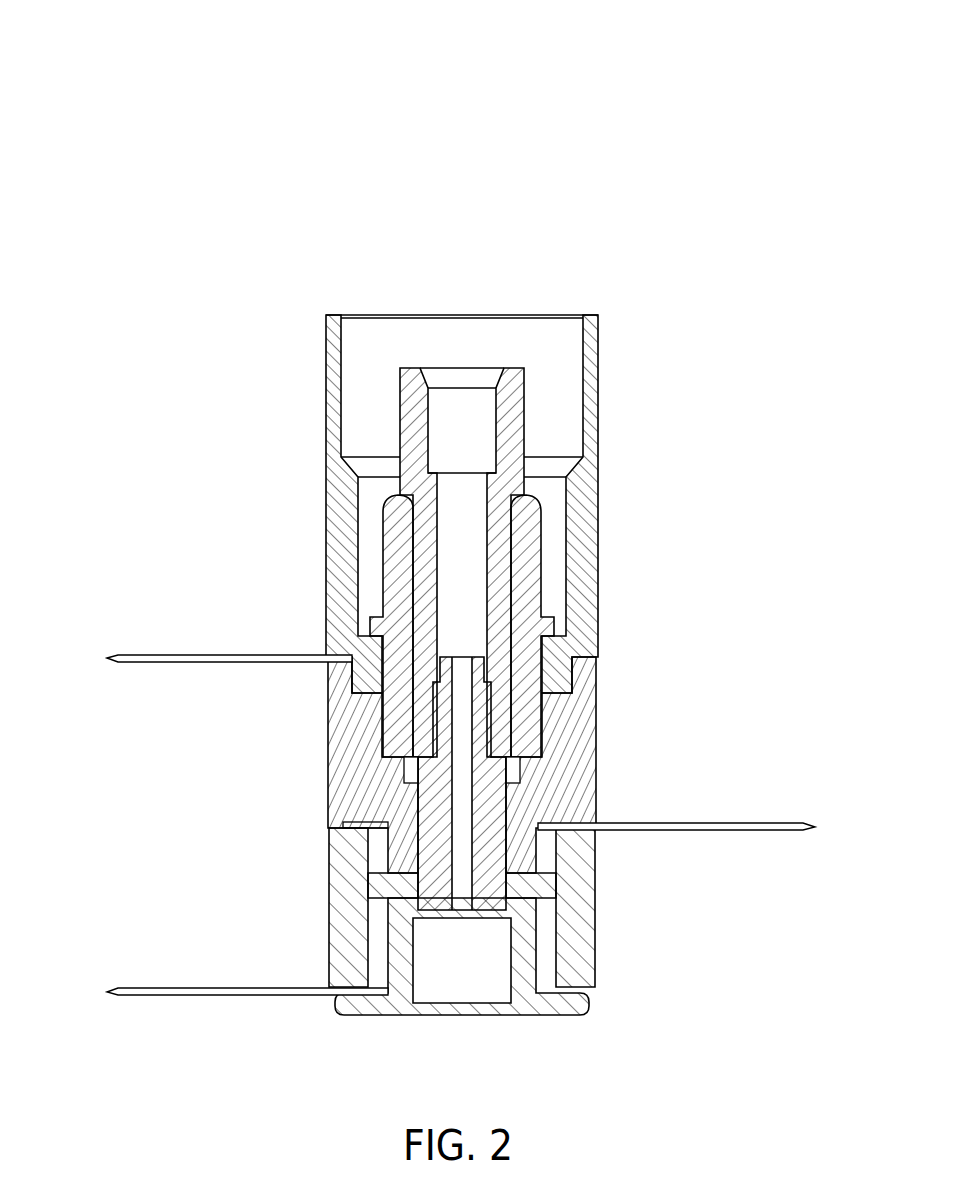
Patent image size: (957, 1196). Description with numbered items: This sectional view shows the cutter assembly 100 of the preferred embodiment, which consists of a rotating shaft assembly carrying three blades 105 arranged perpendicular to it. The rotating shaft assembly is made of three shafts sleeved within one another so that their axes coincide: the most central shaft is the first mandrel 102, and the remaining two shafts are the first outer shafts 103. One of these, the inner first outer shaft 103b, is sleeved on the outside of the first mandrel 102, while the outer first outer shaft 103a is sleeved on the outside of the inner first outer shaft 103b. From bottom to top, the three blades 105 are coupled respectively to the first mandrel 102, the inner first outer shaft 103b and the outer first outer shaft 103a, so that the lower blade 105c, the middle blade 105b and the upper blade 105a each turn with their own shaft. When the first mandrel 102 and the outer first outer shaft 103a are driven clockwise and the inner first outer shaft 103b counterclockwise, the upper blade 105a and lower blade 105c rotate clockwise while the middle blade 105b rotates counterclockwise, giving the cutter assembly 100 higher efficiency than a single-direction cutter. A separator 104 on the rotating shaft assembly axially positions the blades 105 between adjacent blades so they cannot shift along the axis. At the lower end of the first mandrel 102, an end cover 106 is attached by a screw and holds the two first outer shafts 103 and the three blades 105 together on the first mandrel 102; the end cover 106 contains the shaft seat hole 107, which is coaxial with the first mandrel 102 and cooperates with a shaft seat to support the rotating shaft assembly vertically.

The cutter assembly 100 is at (242, 218).
The first mandrel 102 is at (522, 446).
The first outer shaft 103 is at (730, 25).
The outer first outer shaft 103a is at (578, 525).
The inner first outer shaft 103b is at (545, 600).
The separator 104 is at (585, 762).
The blades 105 is at (730, 110).
The upper blade 105a is at (152, 600).
The middle blade 105b is at (728, 825).
The lower blade 105c is at (215, 992).
The end cover 106 is at (523, 975).
The shaft seat hole 107 is at (462, 960).